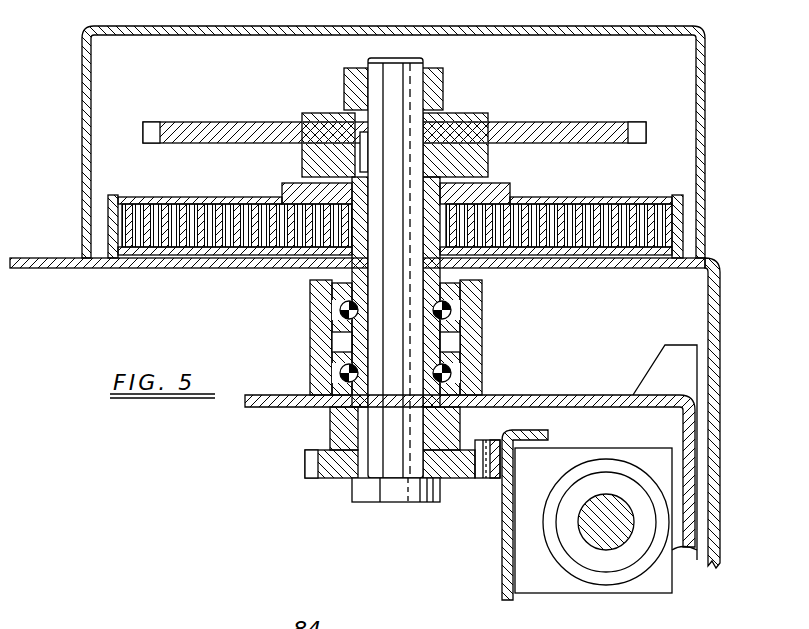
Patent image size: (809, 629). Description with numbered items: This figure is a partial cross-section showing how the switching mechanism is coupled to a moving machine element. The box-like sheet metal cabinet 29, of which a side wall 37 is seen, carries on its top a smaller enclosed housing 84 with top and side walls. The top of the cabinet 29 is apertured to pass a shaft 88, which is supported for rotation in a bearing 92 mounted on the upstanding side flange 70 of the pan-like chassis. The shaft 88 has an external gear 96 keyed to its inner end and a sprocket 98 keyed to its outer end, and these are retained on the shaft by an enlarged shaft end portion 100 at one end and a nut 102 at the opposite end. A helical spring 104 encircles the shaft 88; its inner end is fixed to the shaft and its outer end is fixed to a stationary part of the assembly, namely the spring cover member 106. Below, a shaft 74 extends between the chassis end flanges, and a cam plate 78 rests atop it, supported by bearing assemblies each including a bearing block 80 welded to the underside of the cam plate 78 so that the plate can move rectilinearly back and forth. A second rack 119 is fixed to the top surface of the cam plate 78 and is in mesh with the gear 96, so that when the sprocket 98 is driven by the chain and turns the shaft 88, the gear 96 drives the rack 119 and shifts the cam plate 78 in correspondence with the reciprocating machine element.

The cabinet 29 is at (728, 501).
The side wall 37 is at (70, 268).
The side flange 70 is at (278, 395).
The shaft 74 is at (610, 500).
The cam plate 78 is at (502, 568).
The bearing block 80 is at (568, 582).
The housing 84 is at (528, 28).
The shaft 88 is at (410, 75).
The bearing 92 is at (474, 356).
The external gear 96 is at (315, 468).
The sprocket 98 is at (151, 127).
The enlarged shaft end portion 100 is at (380, 490).
The nut 102 is at (346, 86).
The helical spring 104 is at (238, 203).
The spring cover member 106 is at (186, 197).
The second rack 119 is at (493, 482).